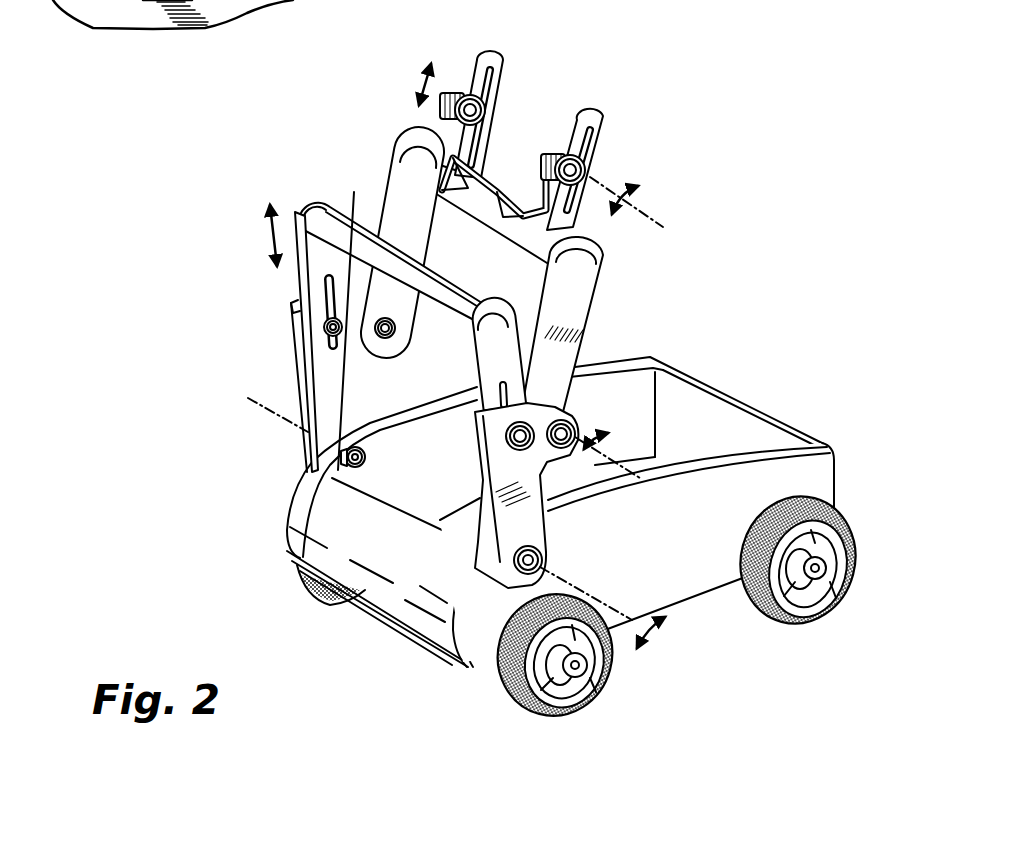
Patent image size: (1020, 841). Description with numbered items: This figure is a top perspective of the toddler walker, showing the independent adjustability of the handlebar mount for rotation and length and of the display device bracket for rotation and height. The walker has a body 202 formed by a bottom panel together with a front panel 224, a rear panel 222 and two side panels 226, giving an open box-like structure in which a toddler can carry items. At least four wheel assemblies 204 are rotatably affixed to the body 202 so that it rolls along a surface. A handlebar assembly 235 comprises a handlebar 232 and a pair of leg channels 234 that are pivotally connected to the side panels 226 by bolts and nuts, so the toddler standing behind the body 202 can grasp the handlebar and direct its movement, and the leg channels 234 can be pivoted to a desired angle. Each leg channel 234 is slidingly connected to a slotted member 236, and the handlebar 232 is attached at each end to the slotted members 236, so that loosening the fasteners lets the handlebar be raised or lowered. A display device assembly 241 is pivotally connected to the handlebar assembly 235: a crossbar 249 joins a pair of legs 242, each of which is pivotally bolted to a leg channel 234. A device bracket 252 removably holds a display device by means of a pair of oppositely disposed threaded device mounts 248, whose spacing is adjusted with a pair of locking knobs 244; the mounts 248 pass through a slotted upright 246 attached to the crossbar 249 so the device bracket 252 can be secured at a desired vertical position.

The body 202 is at (742, 365).
The wheel assemblies 204 is at (507, 681).
The rear panel 222 is at (395, 577).
The front panel 224 is at (778, 427).
The side panels 226 is at (615, 385).
The handlebar 232 is at (353, 237).
The leg channels 234 is at (305, 377).
The handlebar assembly 235 is at (236, 280).
The slotted member 236 is at (298, 213).
The display device assembly 241 is at (670, 187).
The legs 242 is at (395, 180).
The locking knobs 244 is at (440, 108).
The slotted upright 246 is at (508, 62).
The threaded device mounts 248 is at (470, 95).
The crossbar 249 is at (523, 240).
The device bracket 252 is at (505, 185).